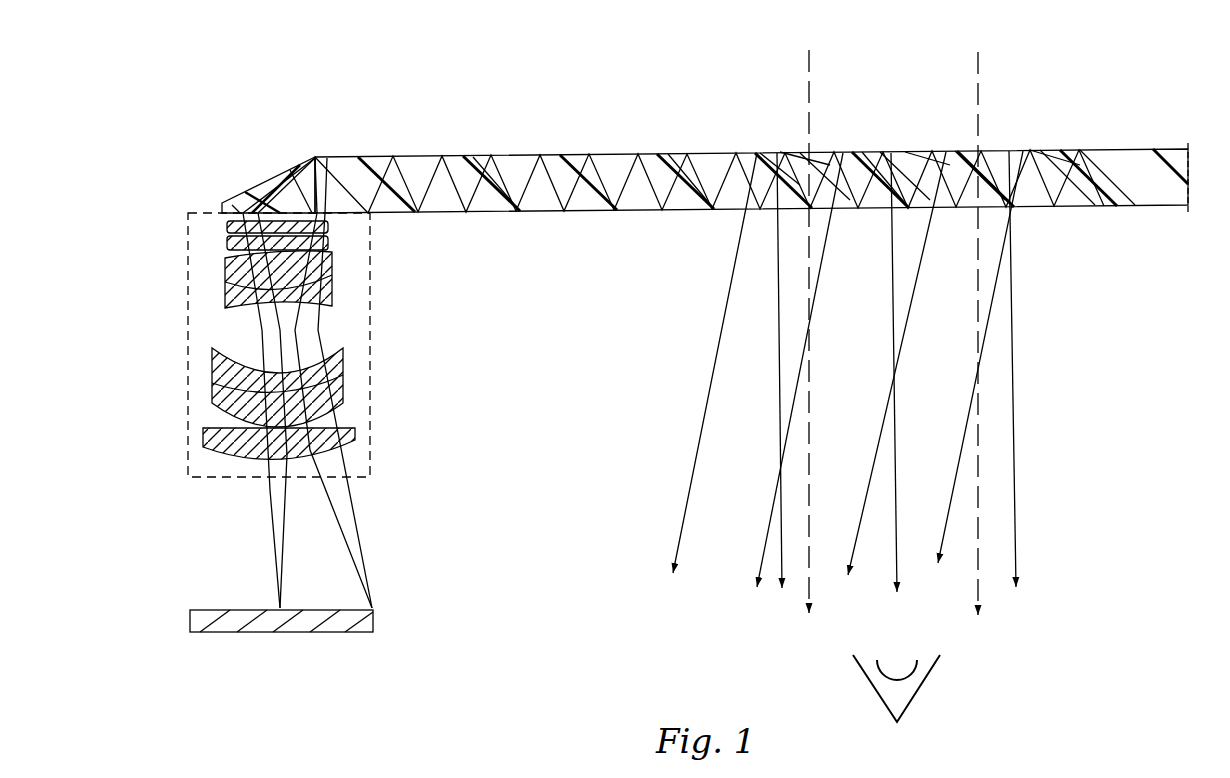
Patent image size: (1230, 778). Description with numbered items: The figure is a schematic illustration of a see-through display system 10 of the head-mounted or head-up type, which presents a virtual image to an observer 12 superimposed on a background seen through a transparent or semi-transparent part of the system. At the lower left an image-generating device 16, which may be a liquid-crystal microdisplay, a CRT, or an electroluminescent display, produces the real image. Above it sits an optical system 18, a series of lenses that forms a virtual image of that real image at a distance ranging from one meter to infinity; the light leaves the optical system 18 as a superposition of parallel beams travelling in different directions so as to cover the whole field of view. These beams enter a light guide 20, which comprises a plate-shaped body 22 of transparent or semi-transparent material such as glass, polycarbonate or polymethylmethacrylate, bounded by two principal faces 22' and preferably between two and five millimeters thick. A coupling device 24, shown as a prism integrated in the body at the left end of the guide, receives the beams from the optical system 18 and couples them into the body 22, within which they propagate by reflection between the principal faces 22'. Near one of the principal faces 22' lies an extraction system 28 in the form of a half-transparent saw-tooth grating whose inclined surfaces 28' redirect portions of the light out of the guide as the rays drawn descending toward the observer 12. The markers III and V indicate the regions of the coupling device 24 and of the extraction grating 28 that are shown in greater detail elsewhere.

The display system 10 is at (150, 208).
The observer 12 is at (915, 690).
The image-generating device 16 is at (182, 605).
The optical system 18 is at (168, 360).
The light guide 20 is at (702, 138).
The plate-shaped body 22 is at (773, 153).
The principal faces 22' is at (709, 181).
The coupling device 24 is at (305, 188).
The image extraction system 28 is at (955, 132).
The inclined surfaces of the grating 28' is at (884, 371).
The section view III reference III is at (243, 175).
The section view V reference V is at (893, 145).